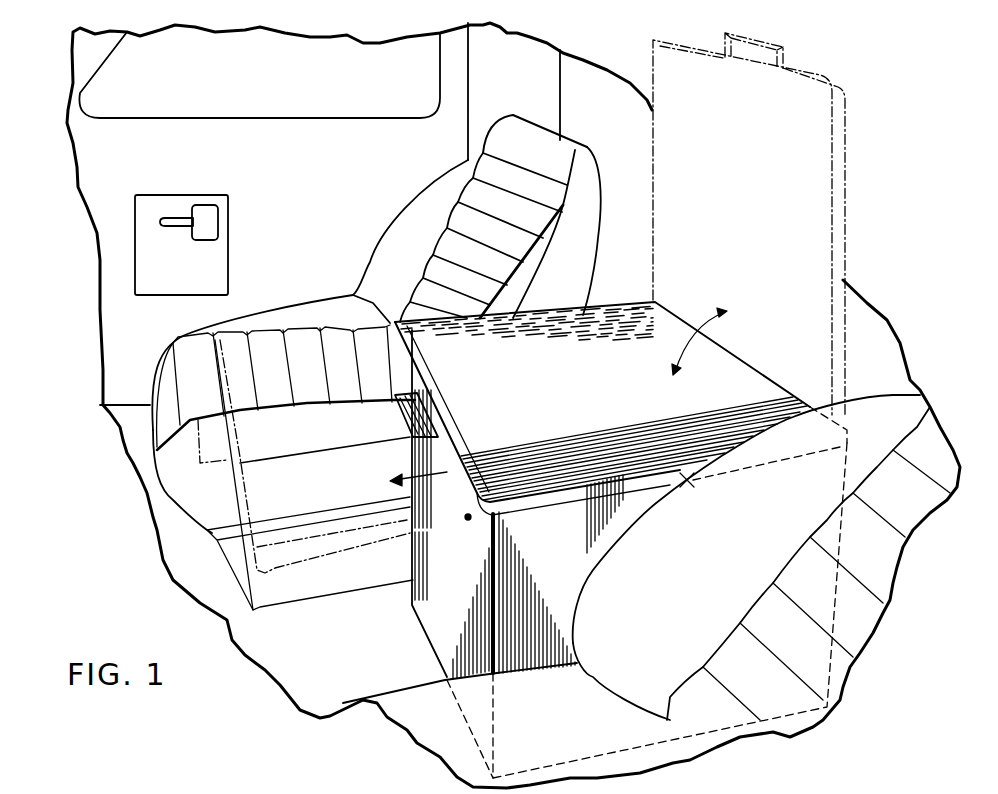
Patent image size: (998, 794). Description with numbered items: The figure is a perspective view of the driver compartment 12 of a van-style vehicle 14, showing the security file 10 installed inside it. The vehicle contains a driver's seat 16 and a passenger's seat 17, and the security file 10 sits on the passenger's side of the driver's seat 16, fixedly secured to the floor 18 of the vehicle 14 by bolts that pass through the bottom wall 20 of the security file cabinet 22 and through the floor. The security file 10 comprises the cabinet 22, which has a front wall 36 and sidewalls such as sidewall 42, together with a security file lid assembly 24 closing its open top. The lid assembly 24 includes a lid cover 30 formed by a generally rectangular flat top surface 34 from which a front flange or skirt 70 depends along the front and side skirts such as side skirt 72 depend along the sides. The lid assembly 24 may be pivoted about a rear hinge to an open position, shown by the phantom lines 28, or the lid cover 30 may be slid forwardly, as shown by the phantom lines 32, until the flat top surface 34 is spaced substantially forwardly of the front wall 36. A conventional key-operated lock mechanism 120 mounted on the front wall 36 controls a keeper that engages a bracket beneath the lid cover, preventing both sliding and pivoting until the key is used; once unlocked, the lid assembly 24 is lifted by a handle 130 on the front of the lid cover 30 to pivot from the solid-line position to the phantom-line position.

The security file 10 is at (575, 525).
The driver compartment 12 is at (224, 659).
The van-style vehicle 14 is at (127, 313).
The driver's seat 16 is at (596, 752).
The passenger's seat 17 is at (277, 377).
The floor 18 is at (408, 675).
The bottom wall 20 is at (425, 645).
The security file cabinet 22 is at (571, 577).
The security file lid assembly 24 is at (562, 340).
The phantom lines 28 is at (845, 205).
The lid cover 30 is at (645, 415).
The phantom lines 32 is at (290, 567).
The flat top surface 34 is at (587, 405).
The front wall 36 is at (440, 568).
The sidewall 42 is at (569, 578).
The front flange or skirt 70 is at (407, 363).
The side flange or side skirt 72 is at (687, 483).
The key-operated lock mechanism 120 is at (468, 520).
The handle 130 is at (783, 50).